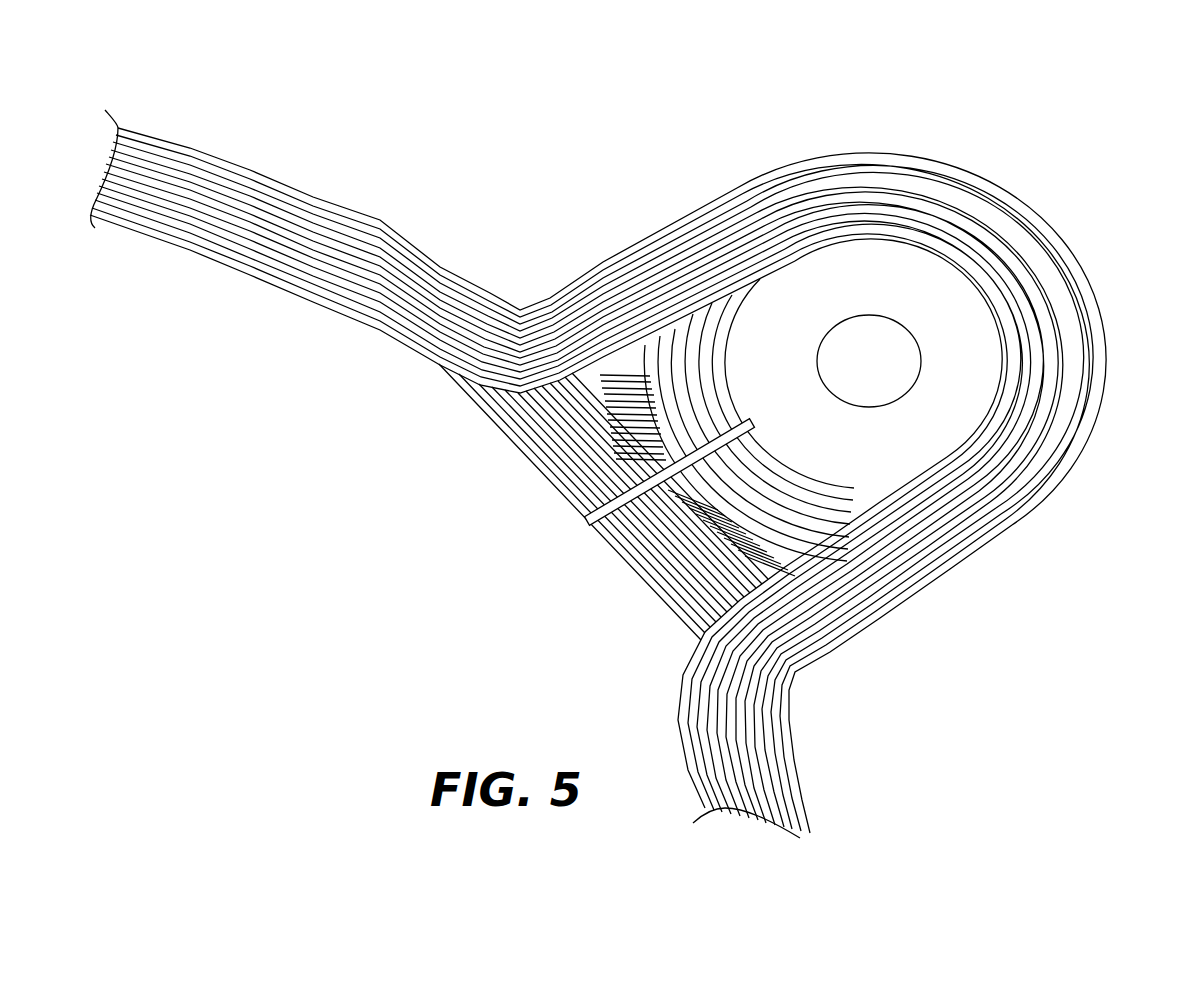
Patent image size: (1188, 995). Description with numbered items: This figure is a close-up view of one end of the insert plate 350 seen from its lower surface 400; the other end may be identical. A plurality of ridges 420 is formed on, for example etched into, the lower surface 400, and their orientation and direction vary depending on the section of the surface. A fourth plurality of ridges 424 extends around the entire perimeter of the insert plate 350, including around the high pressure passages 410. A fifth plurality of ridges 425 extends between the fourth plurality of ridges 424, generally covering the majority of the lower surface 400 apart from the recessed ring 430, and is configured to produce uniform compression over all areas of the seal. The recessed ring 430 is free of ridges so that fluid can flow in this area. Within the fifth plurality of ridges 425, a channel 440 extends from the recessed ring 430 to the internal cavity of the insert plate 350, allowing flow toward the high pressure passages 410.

The insert plate 350 is at (650, 125).
The lower surface 400 is at (887, 299).
The high pressure passages 410 is at (890, 352).
The plurality of ridges 420 is at (838, 590).
The fourth plurality of ridges 424 is at (1052, 437).
The fifth plurality of ridges 425 is at (645, 580).
The recessed ring 430 is at (932, 277).
The channel 440 is at (640, 418).